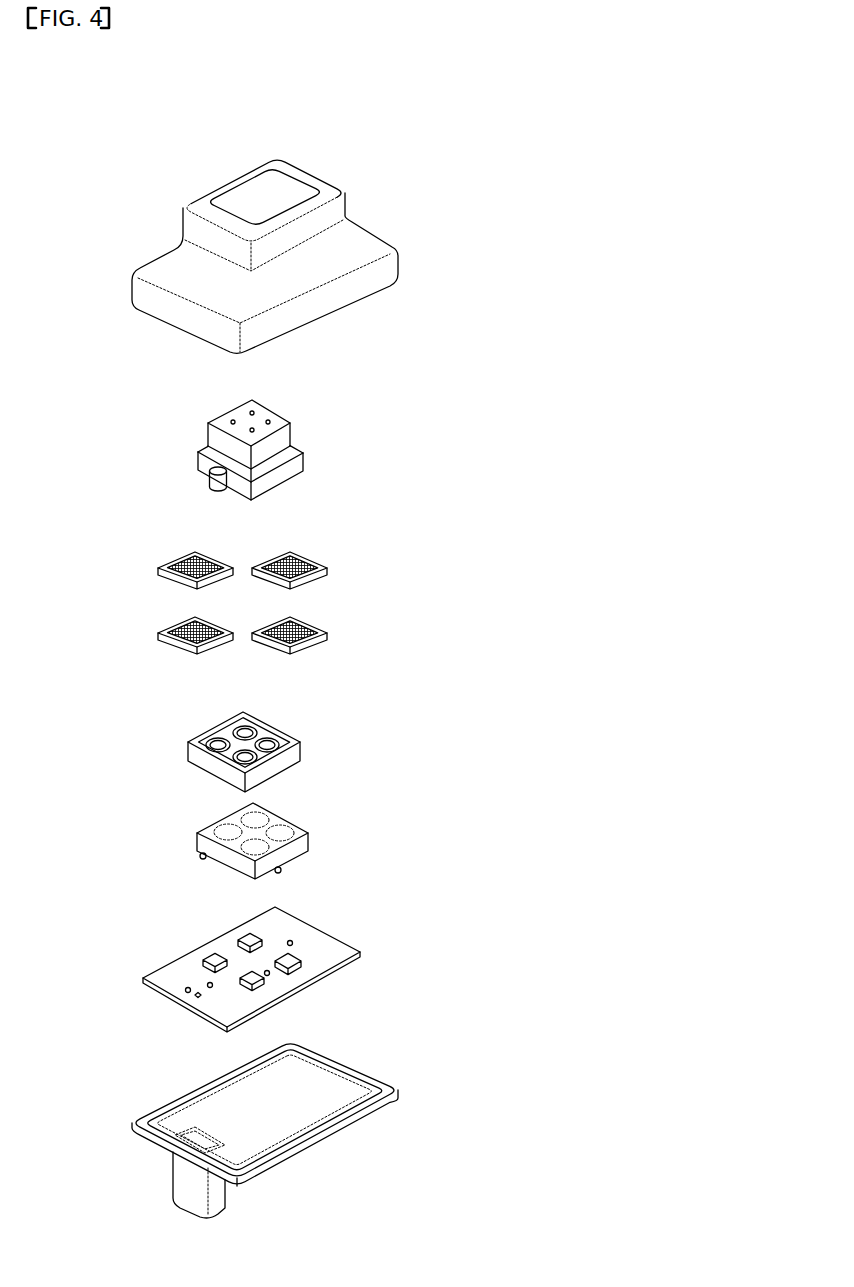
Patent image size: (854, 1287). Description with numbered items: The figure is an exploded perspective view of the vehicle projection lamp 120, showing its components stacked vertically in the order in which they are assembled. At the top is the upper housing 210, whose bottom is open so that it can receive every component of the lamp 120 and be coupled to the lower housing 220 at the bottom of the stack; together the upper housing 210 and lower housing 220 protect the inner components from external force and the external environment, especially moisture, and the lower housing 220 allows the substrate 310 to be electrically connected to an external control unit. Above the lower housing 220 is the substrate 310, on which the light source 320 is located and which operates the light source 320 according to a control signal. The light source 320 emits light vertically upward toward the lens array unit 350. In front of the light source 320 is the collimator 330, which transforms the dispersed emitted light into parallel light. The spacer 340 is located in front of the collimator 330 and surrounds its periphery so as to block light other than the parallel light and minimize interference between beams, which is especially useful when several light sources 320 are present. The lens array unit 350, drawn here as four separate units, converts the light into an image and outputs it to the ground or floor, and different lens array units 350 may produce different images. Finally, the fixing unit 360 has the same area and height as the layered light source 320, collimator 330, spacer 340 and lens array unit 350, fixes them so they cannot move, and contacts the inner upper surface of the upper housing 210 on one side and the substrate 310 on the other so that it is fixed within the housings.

The lamp 120 is at (270, 100).
The upper housing 210 is at (318, 255).
The lower housing 220 is at (307, 1092).
The substrate 310 is at (317, 952).
The light source 320 is at (257, 938).
The collimator 330 is at (277, 832).
The spacer 340 is at (290, 733).
The lens array unit 350 is at (297, 630).
The fixing unit 360 is at (268, 443).